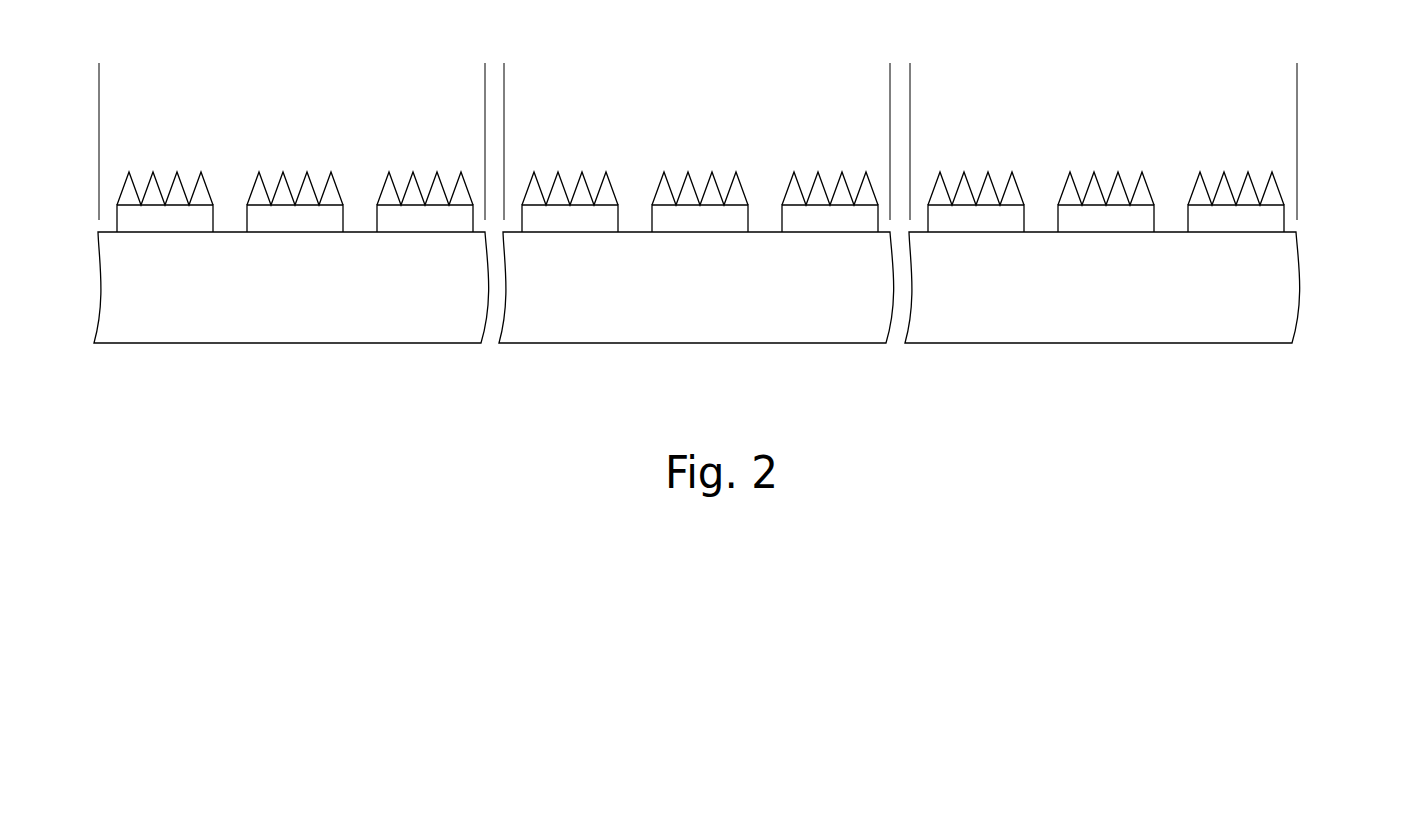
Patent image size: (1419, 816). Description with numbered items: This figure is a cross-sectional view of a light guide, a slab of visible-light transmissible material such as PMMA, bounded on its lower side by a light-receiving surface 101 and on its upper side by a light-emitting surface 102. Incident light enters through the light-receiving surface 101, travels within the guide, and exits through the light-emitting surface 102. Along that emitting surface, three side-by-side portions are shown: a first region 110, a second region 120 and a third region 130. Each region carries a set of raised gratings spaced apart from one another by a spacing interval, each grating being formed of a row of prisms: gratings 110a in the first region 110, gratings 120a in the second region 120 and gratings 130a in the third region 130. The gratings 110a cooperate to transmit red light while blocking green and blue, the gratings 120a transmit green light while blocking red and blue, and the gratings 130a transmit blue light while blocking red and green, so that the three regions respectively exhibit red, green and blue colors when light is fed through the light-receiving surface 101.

The light-receiving surface 101 is at (1308, 290).
The light-emitting surface 102 is at (1267, 232).
The first region 110 is at (485, 77).
The second region 120 is at (890, 77).
The third region 130 is at (1297, 77).
The gratings 110a is at (187, 177).
The gratings 120a is at (695, 173).
The gratings 130a is at (1102, 173).